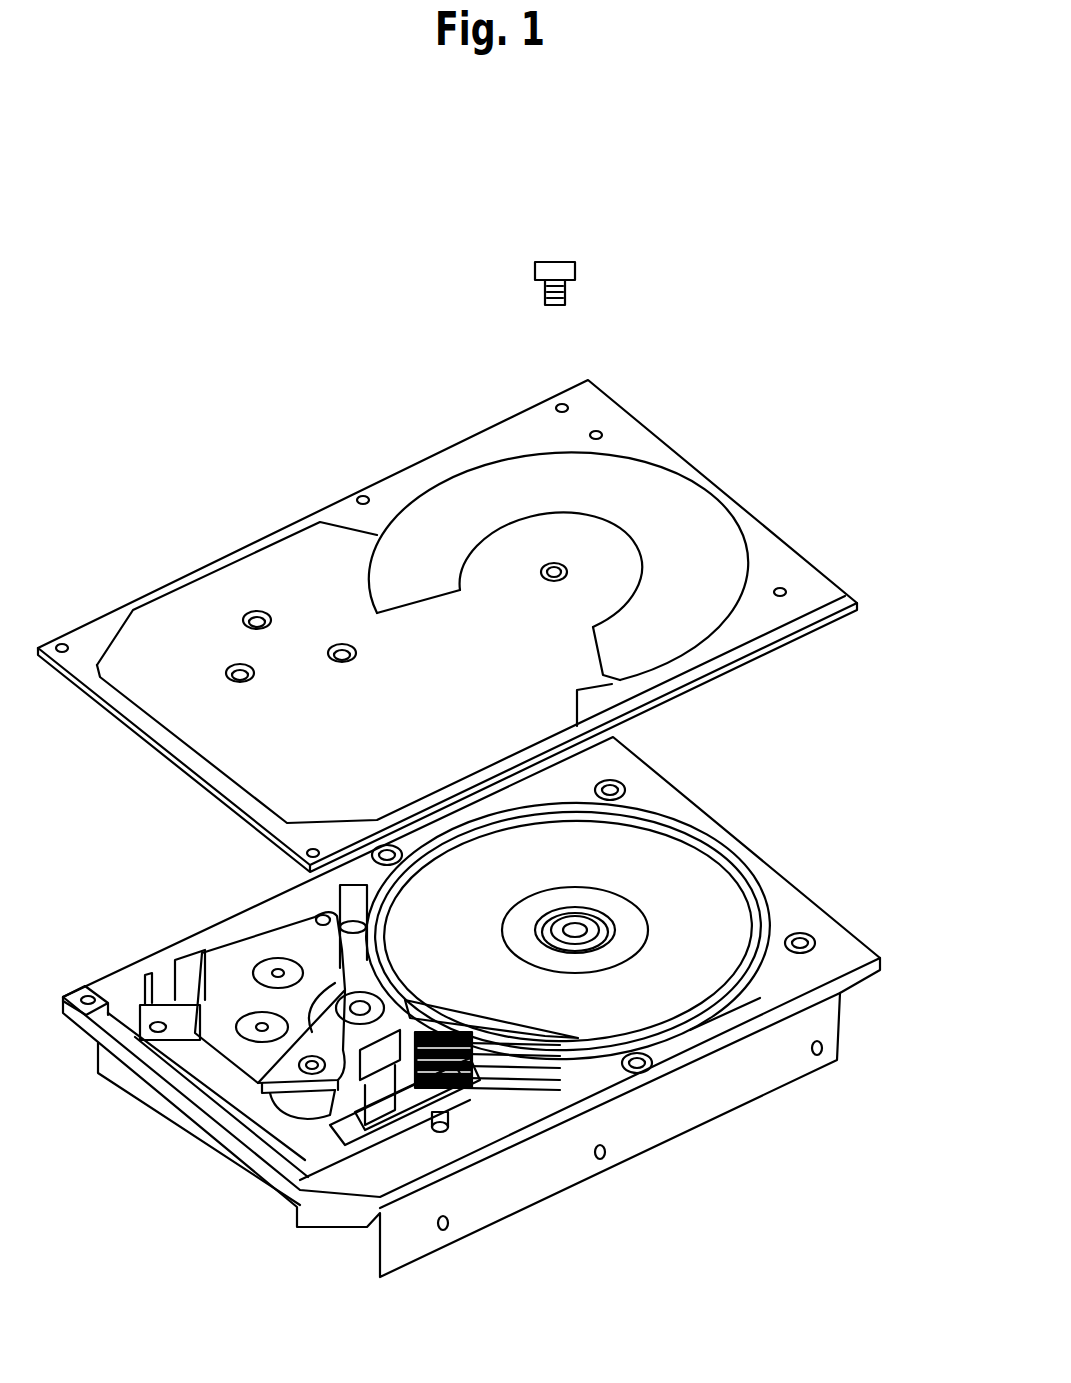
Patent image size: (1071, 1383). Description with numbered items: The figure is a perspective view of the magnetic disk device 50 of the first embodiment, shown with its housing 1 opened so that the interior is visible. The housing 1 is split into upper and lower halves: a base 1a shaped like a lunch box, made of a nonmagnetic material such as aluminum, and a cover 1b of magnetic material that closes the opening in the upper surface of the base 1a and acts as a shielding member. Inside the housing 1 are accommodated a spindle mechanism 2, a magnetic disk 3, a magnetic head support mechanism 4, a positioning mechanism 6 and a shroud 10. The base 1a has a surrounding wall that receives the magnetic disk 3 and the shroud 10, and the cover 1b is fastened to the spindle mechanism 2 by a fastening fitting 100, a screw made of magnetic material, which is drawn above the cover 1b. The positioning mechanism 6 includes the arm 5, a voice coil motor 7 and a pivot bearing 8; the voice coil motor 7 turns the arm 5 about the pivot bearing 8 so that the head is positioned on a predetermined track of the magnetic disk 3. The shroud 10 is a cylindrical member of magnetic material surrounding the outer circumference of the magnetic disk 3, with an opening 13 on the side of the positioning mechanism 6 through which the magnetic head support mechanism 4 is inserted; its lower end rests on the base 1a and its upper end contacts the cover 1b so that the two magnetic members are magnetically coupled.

The housing 1 is at (835, 1090).
The base 1a is at (577, 1158).
The cover 1b is at (725, 492).
The spindle mechanism 2 is at (583, 917).
The magnetic disk 3 is at (733, 900).
The magnetic head support mechanism 4 is at (543, 1030).
The arm 5 is at (396, 1143).
The positioning mechanism 6 is at (297, 952).
The voice coil motor 7 is at (223, 972).
The pivot bearing 8 is at (265, 1082).
The shroud 10 is at (702, 1020).
The opening 13 is at (397, 885).
The magnetic disk device 50 is at (881, 438).
The fastening fitting 100 is at (574, 258).